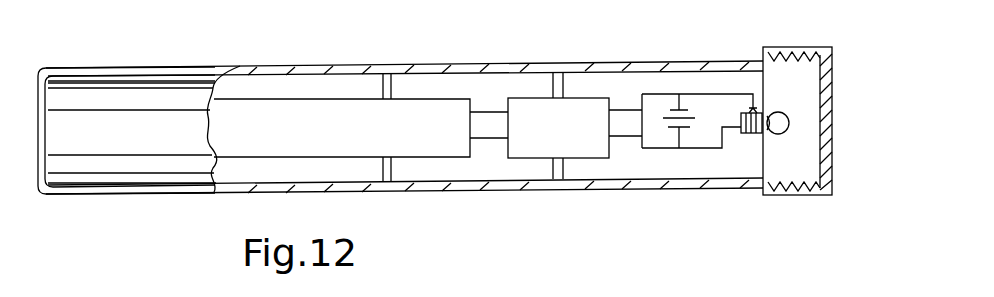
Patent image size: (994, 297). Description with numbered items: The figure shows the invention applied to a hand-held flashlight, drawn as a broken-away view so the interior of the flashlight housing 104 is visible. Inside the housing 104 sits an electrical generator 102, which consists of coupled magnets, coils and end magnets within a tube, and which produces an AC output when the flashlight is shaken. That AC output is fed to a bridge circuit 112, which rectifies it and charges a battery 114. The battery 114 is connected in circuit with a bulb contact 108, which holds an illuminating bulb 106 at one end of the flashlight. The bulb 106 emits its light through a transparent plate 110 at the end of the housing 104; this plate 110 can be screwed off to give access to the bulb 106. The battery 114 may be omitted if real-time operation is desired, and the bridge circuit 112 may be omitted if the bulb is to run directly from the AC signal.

The electrical generator 102 is at (292, 99).
The flashlight housing 104 is at (105, 68).
The illuminating bulb 106 is at (792, 106).
The bulb contact 108 is at (751, 136).
The transparent plate 110 is at (832, 100).
The bridge circuit 112 is at (527, 95).
The battery 114 is at (690, 110).